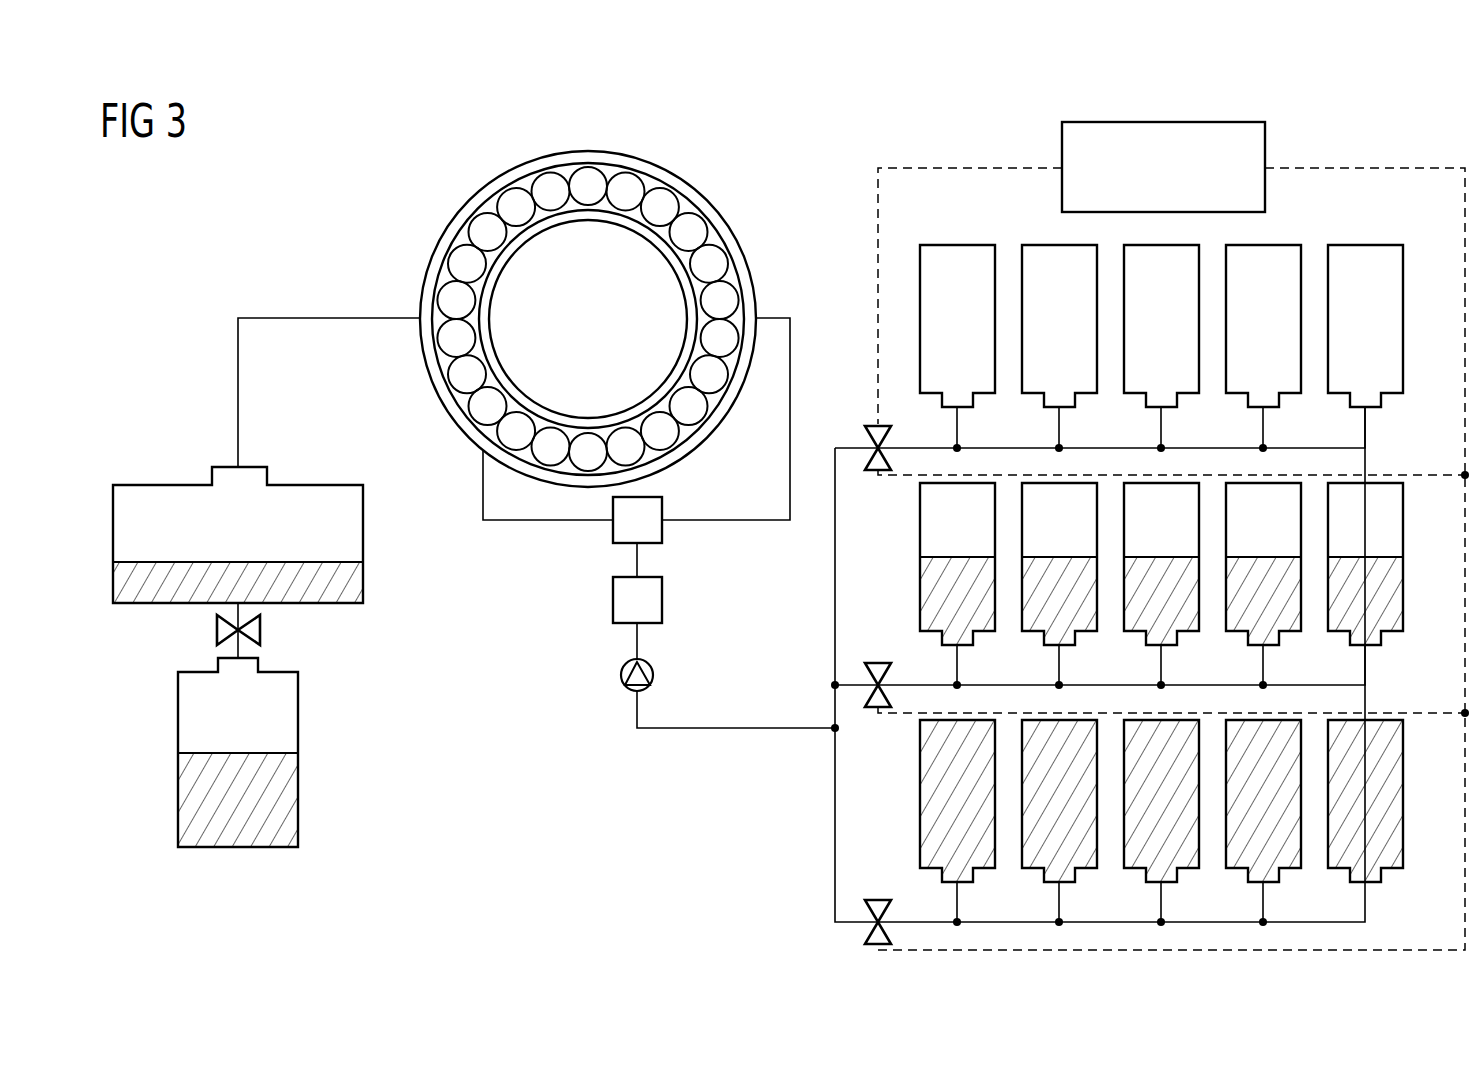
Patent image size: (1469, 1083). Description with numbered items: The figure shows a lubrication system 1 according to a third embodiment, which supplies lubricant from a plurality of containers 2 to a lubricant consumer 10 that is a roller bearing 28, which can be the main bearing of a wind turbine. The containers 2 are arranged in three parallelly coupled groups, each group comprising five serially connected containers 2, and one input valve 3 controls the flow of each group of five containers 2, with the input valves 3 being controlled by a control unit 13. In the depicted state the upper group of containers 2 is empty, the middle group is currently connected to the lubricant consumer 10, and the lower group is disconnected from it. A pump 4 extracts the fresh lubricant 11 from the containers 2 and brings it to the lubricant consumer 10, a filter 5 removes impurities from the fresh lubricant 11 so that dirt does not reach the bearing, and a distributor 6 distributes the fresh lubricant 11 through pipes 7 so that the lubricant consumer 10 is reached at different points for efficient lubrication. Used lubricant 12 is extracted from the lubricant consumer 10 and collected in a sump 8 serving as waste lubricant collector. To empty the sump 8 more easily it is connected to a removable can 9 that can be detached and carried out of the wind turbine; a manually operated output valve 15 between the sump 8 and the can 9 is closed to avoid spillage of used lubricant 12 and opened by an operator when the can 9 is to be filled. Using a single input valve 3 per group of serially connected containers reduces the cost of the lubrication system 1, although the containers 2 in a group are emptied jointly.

The lubrication system 1 is at (280, 163).
The containers 2 is at (957, 245).
The input valve 3 is at (869, 423).
The pump 4 is at (621, 676).
The filter 5 is at (613, 601).
The distributor 6 is at (613, 530).
The pipes 7 is at (689, 730).
The sump 8 is at (363, 527).
The removable can 9 is at (298, 705).
The lubricant consumer 10 is at (557, 319).
The roller bearing 28 is at (451, 232).
The fresh lubricant 11 is at (930, 575).
The used lubricant 12 is at (348, 582).
The control unit 13 is at (1180, 187).
The output valve 15 is at (263, 629).